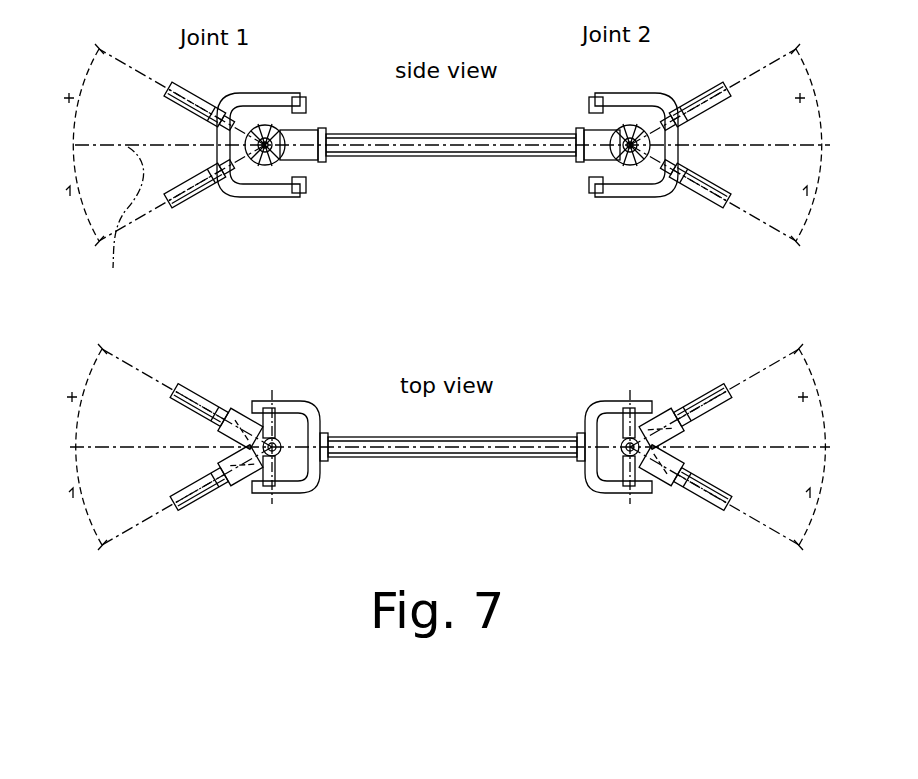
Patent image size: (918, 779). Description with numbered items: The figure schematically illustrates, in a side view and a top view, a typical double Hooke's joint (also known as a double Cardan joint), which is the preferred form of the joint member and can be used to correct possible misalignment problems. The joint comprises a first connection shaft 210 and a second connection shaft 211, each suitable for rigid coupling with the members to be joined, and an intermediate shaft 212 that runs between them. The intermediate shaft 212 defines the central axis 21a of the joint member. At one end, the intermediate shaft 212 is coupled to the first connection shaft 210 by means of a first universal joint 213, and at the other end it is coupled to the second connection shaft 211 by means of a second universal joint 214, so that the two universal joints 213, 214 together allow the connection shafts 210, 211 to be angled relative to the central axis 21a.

The central axis 21a is at (117, 227).
The first connection shaft 210 is at (217, 195).
The second connection shaft 211 is at (694, 195).
The intermediate shaft 212 is at (510, 158).
The first universal joint 213 is at (280, 214).
The second universal joint 214 is at (626, 218).